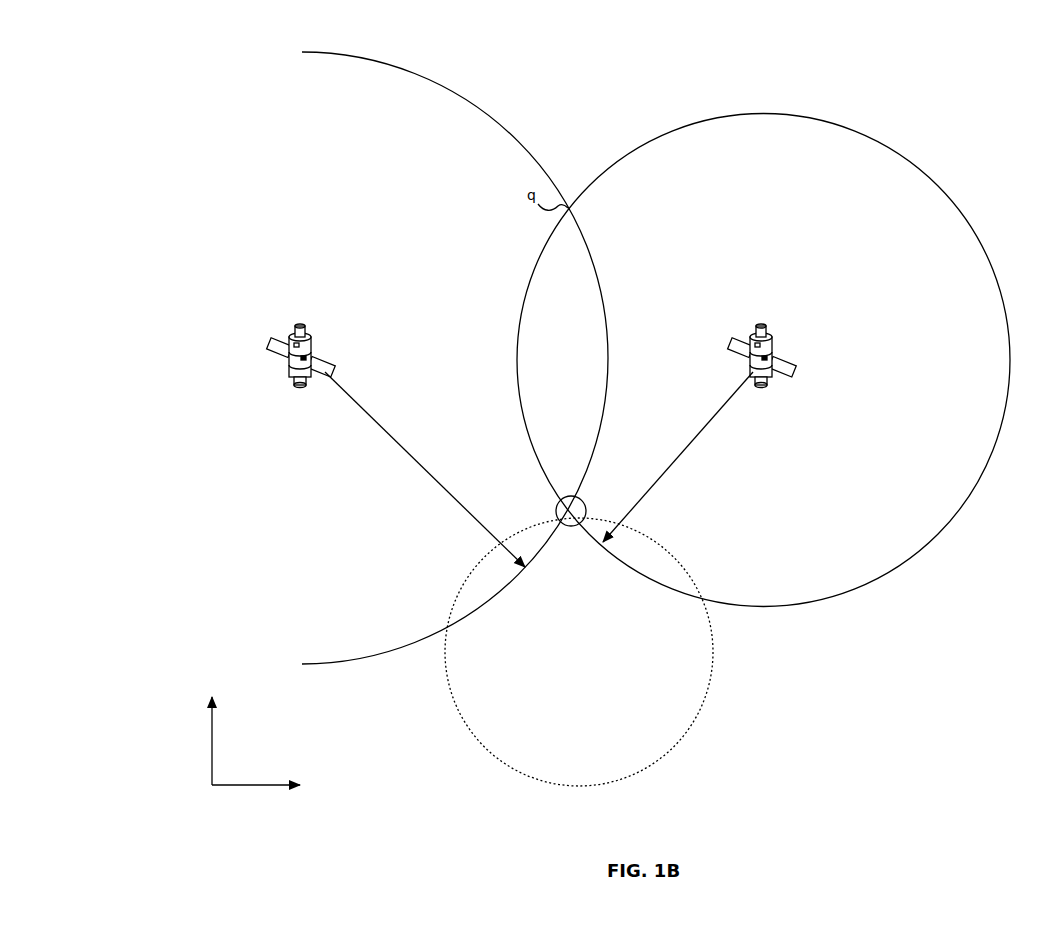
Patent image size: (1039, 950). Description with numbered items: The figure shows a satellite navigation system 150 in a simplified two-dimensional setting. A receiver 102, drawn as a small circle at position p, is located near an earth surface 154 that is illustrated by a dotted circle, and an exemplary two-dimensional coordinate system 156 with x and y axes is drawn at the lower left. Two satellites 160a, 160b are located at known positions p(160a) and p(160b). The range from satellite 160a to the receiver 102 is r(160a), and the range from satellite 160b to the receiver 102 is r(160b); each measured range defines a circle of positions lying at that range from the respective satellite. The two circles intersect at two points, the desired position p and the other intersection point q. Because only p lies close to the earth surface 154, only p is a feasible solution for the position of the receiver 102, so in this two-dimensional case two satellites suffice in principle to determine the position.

The satellite navigation system 150 is at (60, 42).
The satellite 160a is at (290, 372).
The satellite 160b is at (771, 341).
The receiver 102 is at (556, 503).
The earth surface 154 is at (450, 684).
The two-dimensional coordinate system 156 is at (217, 787).